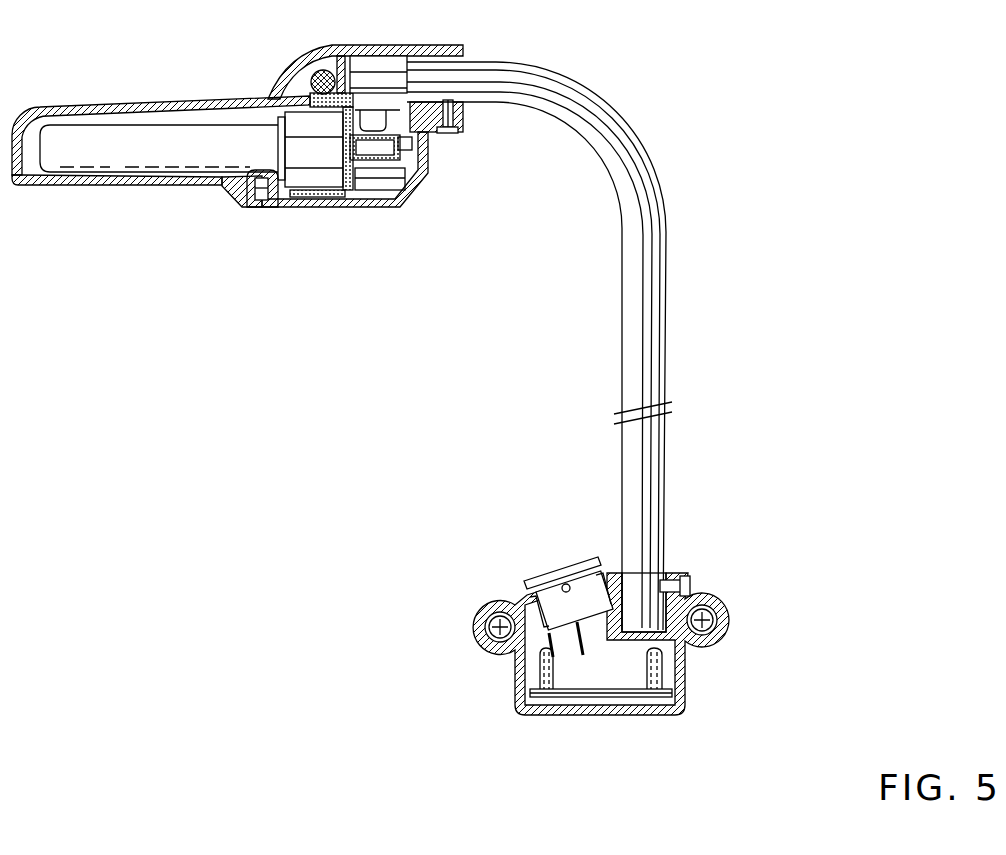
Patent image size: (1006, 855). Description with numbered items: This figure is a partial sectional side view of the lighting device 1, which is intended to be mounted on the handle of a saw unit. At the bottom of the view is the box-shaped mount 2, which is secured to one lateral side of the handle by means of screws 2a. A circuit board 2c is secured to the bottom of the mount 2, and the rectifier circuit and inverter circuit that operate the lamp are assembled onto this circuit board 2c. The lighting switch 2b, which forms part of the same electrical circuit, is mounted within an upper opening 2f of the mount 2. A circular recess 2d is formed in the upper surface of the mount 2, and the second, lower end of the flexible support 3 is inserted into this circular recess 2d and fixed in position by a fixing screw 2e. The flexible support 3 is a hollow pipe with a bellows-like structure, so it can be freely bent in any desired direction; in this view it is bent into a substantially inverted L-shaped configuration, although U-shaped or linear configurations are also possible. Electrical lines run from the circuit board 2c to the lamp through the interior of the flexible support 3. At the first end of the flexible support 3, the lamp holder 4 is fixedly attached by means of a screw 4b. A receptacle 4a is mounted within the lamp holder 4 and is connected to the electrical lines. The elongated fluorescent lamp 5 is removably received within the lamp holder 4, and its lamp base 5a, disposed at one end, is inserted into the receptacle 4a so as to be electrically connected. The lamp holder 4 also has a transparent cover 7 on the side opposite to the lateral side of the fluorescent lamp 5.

The lighting device 1 is at (395, 370).
The mount 2 is at (567, 712).
The screws 2a is at (483, 640).
The lighting switch 2b is at (563, 612).
The circuit board 2c is at (597, 687).
The circular recess 2d is at (645, 550).
The fixing screw 2e is at (700, 590).
The upper opening 2f is at (577, 585).
The flexible support 3 is at (655, 302).
The lamp holder 4 is at (157, 97).
The receptacle 4a is at (308, 98).
The screw 4b is at (450, 134).
The fluorescent lamp 5 is at (57, 140).
The lamp base 5a is at (303, 152).
The transparent cover 7 is at (115, 187).